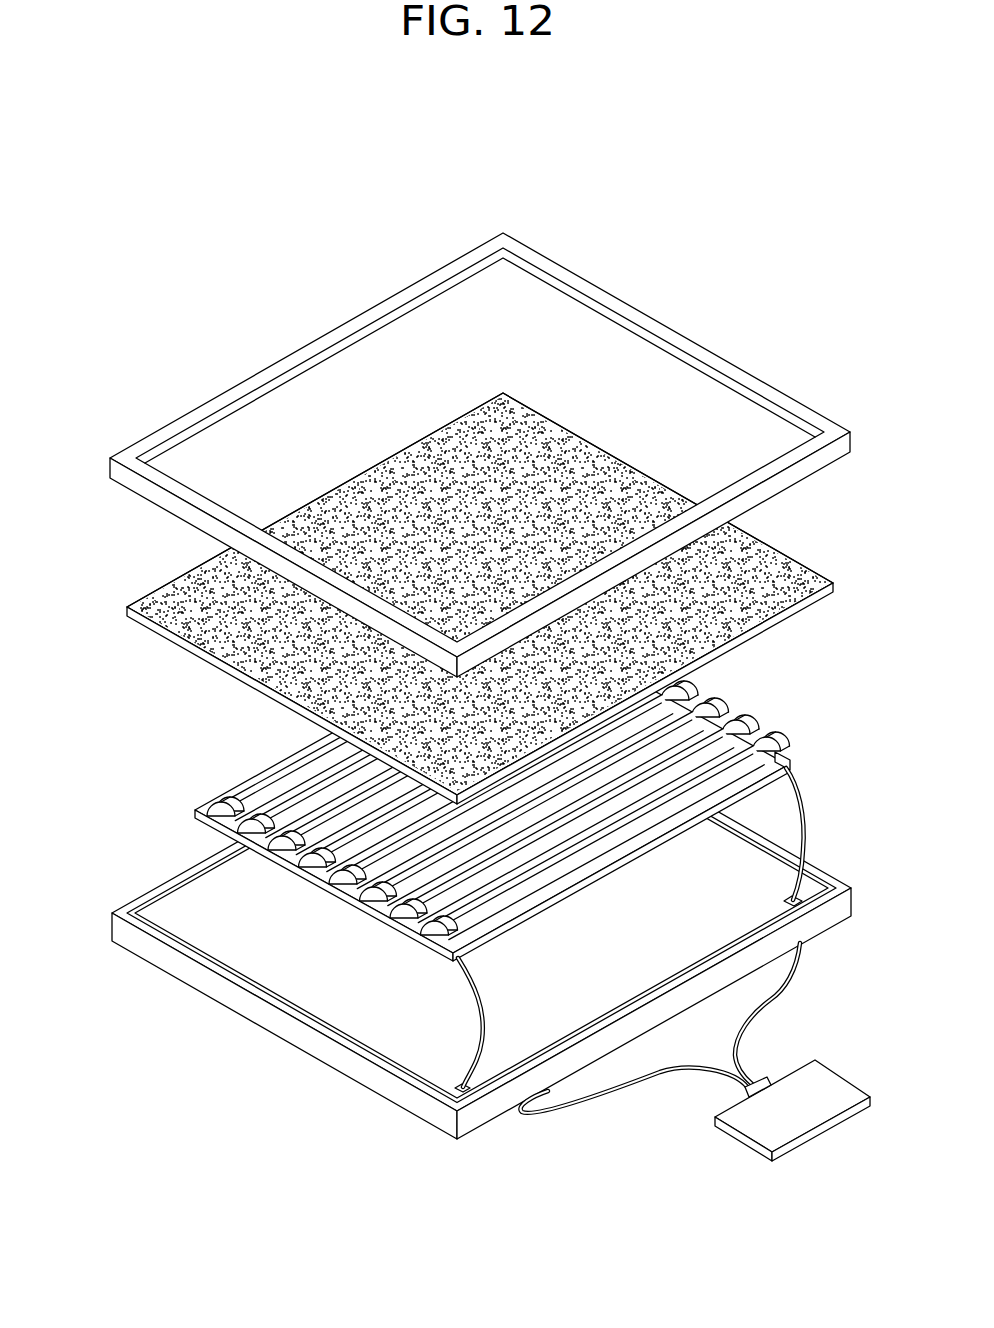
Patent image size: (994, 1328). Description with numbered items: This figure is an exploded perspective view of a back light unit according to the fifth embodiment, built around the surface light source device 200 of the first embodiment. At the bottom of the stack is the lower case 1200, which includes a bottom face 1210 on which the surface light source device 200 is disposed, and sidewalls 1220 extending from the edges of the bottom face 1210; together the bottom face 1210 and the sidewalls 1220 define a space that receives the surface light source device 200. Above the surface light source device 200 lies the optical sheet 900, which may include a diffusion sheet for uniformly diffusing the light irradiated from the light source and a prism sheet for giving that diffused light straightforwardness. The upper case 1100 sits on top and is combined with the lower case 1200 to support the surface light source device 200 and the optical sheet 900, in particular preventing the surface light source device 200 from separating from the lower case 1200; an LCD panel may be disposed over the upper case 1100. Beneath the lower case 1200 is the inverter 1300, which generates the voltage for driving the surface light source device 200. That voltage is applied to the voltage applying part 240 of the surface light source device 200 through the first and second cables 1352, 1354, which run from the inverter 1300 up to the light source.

The upper case 1100 is at (151, 521).
The optical sheet 900 is at (138, 624).
The surface light source device 200 is at (431, 850).
The voltage applying part 240 is at (217, 772).
The lower case 1200 is at (453, 914).
The bottom face 1210 is at (387, 1018).
The sidewalls 1220 is at (238, 1002).
The inverter 1300 is at (762, 1127).
The first cable 1352 is at (590, 1098).
The second cable 1354 is at (742, 1043).